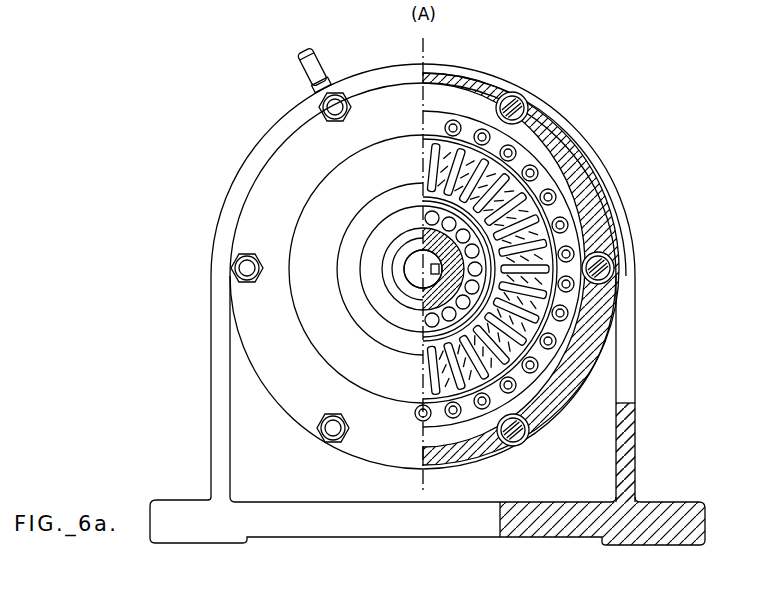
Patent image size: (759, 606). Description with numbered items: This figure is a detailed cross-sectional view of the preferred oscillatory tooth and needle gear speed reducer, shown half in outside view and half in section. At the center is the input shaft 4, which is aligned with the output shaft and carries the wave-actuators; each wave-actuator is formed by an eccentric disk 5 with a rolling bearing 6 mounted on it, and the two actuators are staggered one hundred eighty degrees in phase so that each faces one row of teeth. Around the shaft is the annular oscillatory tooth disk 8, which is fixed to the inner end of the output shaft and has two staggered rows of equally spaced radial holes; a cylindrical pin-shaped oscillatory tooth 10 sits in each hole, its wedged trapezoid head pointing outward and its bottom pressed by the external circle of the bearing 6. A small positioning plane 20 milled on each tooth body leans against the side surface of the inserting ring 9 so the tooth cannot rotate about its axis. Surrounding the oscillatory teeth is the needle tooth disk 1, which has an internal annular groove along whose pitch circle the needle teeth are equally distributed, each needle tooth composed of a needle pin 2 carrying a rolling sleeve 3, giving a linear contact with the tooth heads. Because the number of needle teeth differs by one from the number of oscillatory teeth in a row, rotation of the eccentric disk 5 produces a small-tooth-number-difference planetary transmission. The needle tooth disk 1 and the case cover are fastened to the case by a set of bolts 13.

The needle tooth disk 1 is at (434, 88).
The needle pins 2 is at (458, 120).
The rolling sleeves 3 is at (503, 155).
The input shaft 4 is at (432, 251).
The eccentric disk 5 is at (548, 281).
The rolling bearing 6 is at (560, 393).
The oscillatory tooth disk 8 is at (522, 197).
The inserting ring 9 is at (530, 340).
The oscillatory teeth 10 is at (476, 322).
The bolts 13 is at (243, 265).
The positioning plane 20 is at (418, 376).